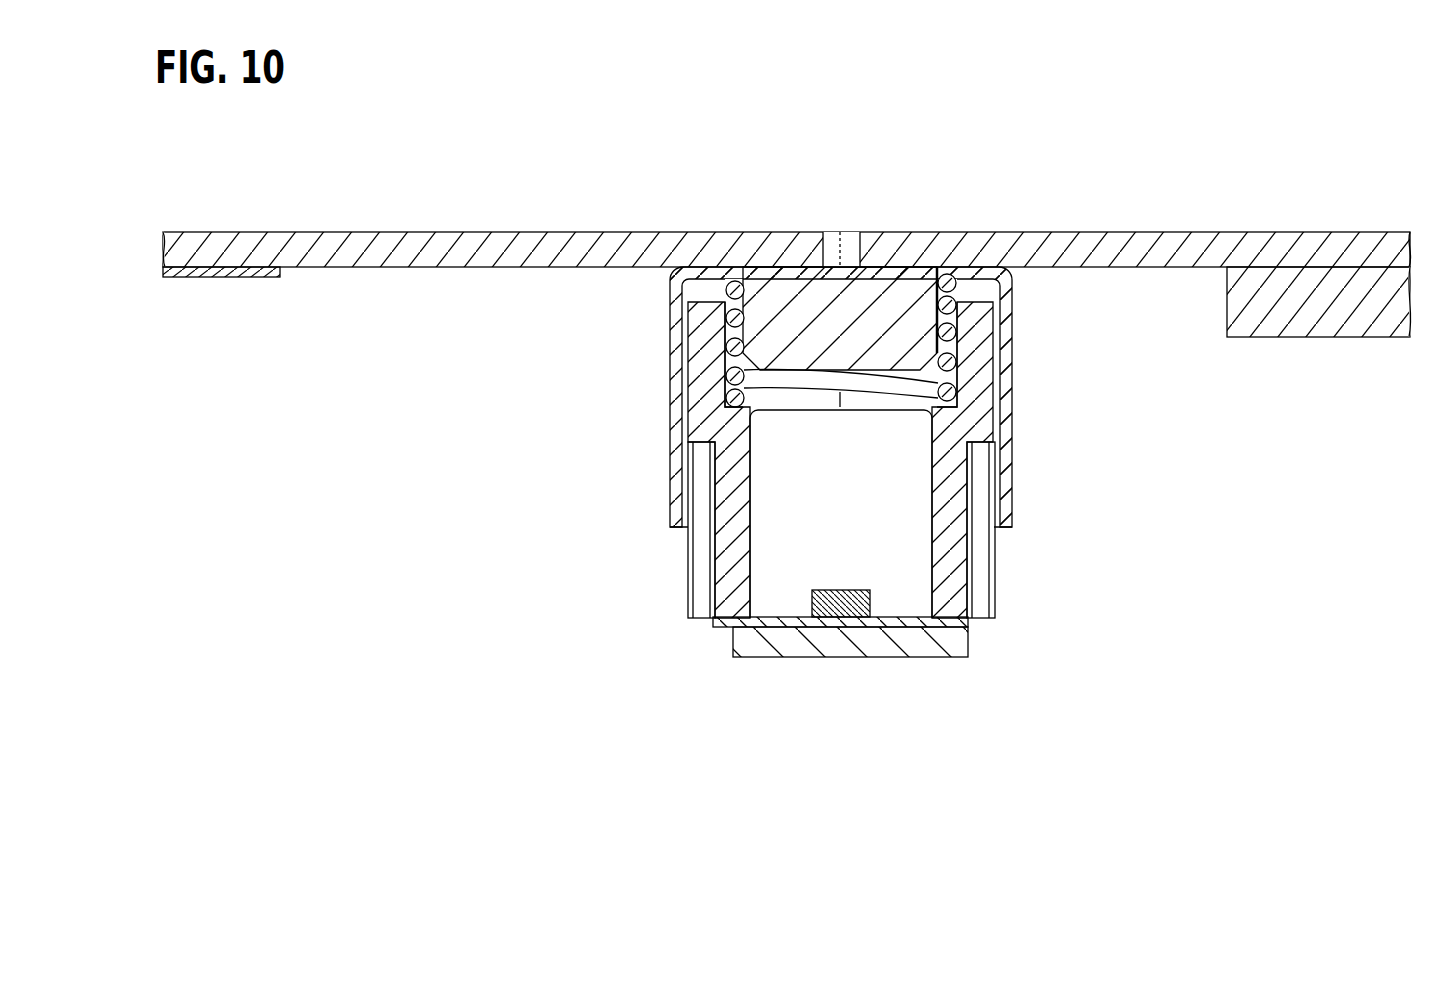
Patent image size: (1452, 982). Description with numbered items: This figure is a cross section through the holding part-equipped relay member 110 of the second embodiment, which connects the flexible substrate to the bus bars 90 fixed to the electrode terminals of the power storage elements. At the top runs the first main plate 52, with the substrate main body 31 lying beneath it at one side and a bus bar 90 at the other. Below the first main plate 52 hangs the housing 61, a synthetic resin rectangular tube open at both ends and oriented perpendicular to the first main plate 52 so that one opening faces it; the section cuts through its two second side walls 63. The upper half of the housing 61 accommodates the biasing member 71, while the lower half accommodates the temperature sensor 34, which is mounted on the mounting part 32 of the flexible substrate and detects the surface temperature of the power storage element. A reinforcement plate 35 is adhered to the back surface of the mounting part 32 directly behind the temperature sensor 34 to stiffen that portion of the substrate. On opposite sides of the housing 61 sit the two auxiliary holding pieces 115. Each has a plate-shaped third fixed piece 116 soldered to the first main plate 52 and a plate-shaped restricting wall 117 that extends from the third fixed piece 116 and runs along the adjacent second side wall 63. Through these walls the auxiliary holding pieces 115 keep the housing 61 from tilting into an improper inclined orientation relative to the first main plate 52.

The first main plate 52 is at (458, 245).
The substrate main body 31 is at (226, 272).
The bus bar 90 is at (1322, 323).
The biasing member 71 is at (939, 277).
The third fixed piece 116 is at (970, 270).
The restricting wall 117 is at (1013, 330).
The auxiliary holding piece 115 is at (906, 330).
The holding part-equipped relay member 110 is at (882, 442).
The second side wall 63 is at (698, 418).
The housing 61 is at (784, 526).
The mounting part 32 is at (723, 622).
The reinforcement plate 35 is at (787, 637).
The temperature sensor 34 is at (840, 590).